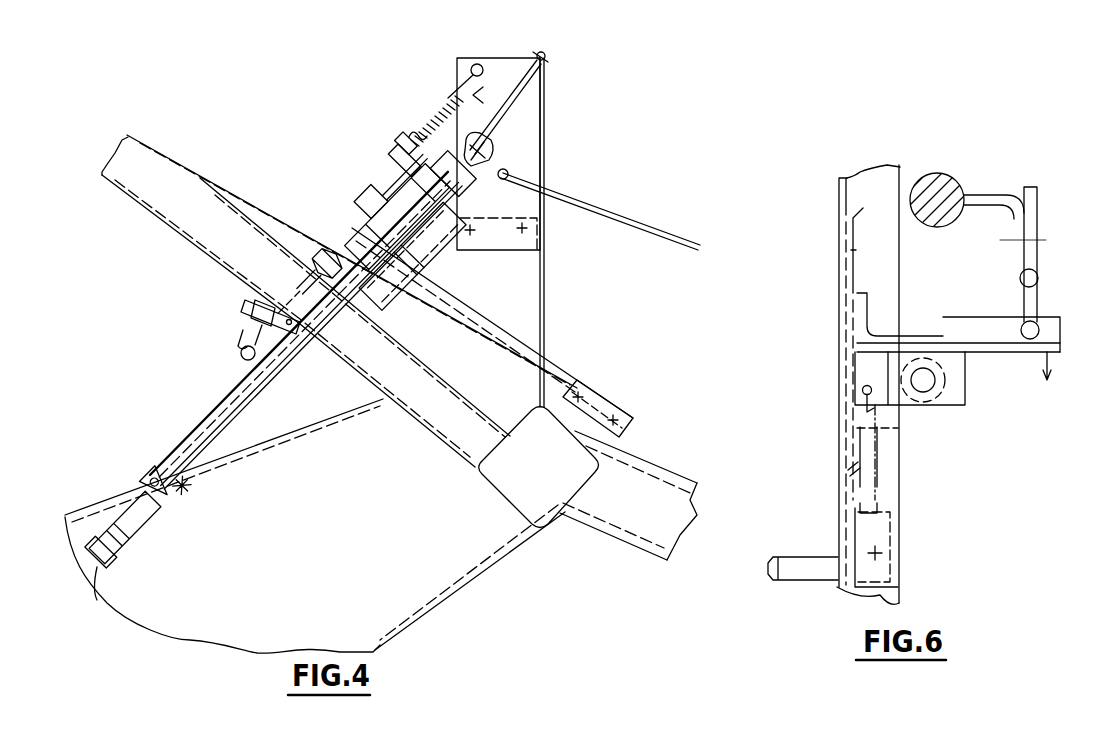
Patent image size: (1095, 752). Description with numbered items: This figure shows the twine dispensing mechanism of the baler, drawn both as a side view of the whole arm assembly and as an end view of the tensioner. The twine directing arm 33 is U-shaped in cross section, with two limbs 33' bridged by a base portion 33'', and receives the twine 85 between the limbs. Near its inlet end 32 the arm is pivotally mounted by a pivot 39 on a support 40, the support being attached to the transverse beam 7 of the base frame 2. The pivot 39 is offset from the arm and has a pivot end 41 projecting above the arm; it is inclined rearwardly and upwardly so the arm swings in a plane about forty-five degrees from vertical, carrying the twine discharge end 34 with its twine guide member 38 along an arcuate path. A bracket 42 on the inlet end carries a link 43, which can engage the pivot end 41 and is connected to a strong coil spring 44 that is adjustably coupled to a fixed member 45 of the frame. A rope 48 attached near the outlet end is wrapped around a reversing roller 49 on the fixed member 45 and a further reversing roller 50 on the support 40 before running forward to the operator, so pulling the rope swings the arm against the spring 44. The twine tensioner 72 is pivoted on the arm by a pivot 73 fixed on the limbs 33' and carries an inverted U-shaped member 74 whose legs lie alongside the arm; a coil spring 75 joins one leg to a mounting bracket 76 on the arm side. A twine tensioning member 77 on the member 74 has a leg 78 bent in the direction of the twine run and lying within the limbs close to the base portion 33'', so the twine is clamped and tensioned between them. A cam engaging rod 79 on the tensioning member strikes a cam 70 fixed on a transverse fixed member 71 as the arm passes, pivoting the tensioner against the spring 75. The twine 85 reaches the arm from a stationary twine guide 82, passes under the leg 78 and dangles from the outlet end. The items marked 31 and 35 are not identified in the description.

In FIG. 4, the base frame 2 is at (499, 569).
In FIG. 4, the transverse beam 7 is at (557, 523).
In FIG. 4, the actuator assembly 31 is at (583, 140).
In FIG. 4, the inlet end 32 is at (410, 148).
In FIG. 4, the twine directing arm 33 is at (308, 331).
In FIG. 6, the limbs 33' is at (921, 547).
In FIG. 6, the base portion 33'' is at (834, 384).
In FIG. 4, the twine discharge end 34 is at (108, 575).
In FIG. 4, the pivot assembly 35 is at (181, 330).
In FIG. 4, the twine guide member 38 is at (107, 553).
In FIG. 4, the pivot 39 is at (420, 270).
In FIG. 4, the support 40 is at (447, 202).
In FIG. 4, the pivot end 41 is at (357, 192).
In FIG. 4, the bracket 42 is at (380, 168).
In FIG. 4, the link 43 is at (395, 150).
In FIG. 4, the coil spring 44 is at (432, 110).
In FIG. 4, the fixed member 45 is at (545, 98).
In FIG. 4, the rope 48 is at (647, 226).
In FIG. 4, the reversing roller 49 is at (522, 66).
In FIG. 4, the further reversing roller 50 is at (494, 147).
In FIG. 4, the cam 70 is at (245, 313).
In FIG. 6, the cam 70 is at (1040, 275).
In FIG. 4, the transverse fixed member 71 is at (243, 350).
In FIG. 6, the transverse fixed member 71 is at (963, 190).
In FIG. 4, the twine tensioner 72 is at (178, 287).
In FIG. 6, the twine tensioner 72 is at (967, 410).
In FIG. 6, the pivot 73 is at (940, 383).
In FIG. 6, the inverted U-shaped member 74 is at (943, 407).
In FIG. 6, the coil spring 75 is at (878, 473).
In FIG. 6, the mounting bracket 76 is at (893, 500).
In FIG. 6, the twine tensioning member 77 is at (940, 340).
In FIG. 6, the leg 78 is at (865, 310).
In FIG. 6, the cam engaging rod 79 is at (1048, 317).
In FIG. 4, the stationary twine guide 82 is at (317, 247).
In FIG. 4, the twine 85 is at (97, 600).
In FIG. 6, the twine 85 is at (863, 208).